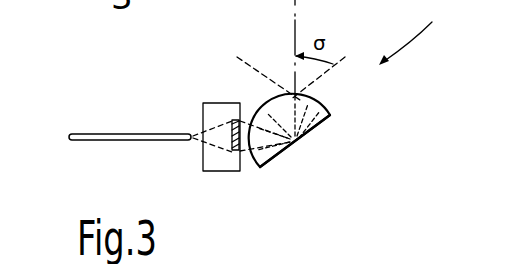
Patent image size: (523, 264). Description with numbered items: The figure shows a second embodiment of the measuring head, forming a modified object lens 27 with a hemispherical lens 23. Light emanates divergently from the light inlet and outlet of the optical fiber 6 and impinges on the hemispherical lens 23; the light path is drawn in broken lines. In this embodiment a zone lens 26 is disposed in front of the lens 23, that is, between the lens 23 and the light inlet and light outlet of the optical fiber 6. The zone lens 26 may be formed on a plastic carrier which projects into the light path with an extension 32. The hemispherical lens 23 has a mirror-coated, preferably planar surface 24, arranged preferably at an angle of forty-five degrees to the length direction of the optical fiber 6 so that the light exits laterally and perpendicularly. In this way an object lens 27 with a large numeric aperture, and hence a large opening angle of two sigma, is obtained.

The optical fiber 6 is at (95, 134).
The extension 32 is at (208, 113).
The zone lens 26 is at (235, 120).
The hemispherical lens 23 is at (333, 107).
The mirror-coated planar surface 24 is at (302, 142).
The object lens 27 is at (419, 32).